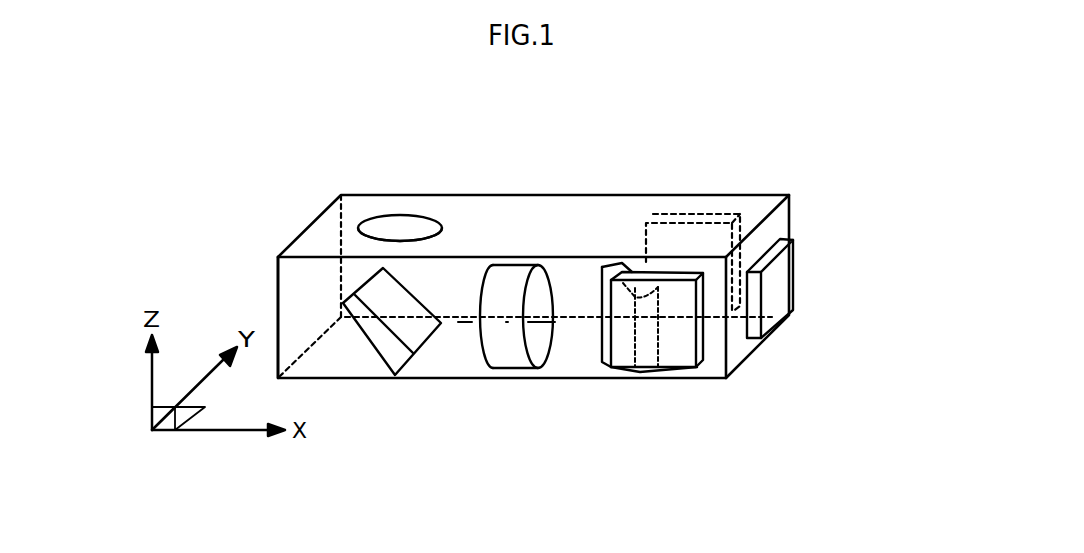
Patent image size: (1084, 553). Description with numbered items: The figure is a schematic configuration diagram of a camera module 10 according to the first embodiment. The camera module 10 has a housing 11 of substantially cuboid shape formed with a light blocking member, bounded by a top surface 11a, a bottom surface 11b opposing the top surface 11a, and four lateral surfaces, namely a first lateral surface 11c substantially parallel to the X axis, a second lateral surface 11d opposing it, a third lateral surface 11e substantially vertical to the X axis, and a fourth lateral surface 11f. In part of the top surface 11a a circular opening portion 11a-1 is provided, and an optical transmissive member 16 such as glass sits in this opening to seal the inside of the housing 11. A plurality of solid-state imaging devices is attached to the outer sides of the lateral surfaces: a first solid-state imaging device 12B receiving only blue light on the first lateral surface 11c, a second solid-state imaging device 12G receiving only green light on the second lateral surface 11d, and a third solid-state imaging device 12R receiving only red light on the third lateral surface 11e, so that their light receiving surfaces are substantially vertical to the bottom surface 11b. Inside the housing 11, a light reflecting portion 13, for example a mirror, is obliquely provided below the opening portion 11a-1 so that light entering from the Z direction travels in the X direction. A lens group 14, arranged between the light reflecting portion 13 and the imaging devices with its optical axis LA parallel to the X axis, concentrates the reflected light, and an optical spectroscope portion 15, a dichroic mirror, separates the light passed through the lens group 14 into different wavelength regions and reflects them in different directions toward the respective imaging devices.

The camera module 10 is at (772, 164).
The housing 11 is at (557, 185).
The top surface 11a is at (503, 218).
The opening portion 11a-1 is at (438, 214).
The bottom surface 11b is at (341, 350).
The first lateral surface 11c is at (447, 360).
The second lateral surface 11d is at (737, 350).
The third lateral surface 11e is at (638, 213).
The fourth lateral surface 11f is at (293, 273).
The third solid-state imaging device 12R is at (698, 212).
The second solid-state imaging device 12G is at (780, 283).
The first solid-state imaging device 12B is at (678, 358).
The light reflecting portion 13 is at (410, 350).
The lens group 14 is at (538, 357).
The optical spectroscope portion 15 is at (596, 333).
The optical transmissive member 16 is at (392, 218).
The optical axis LA is at (472, 322).